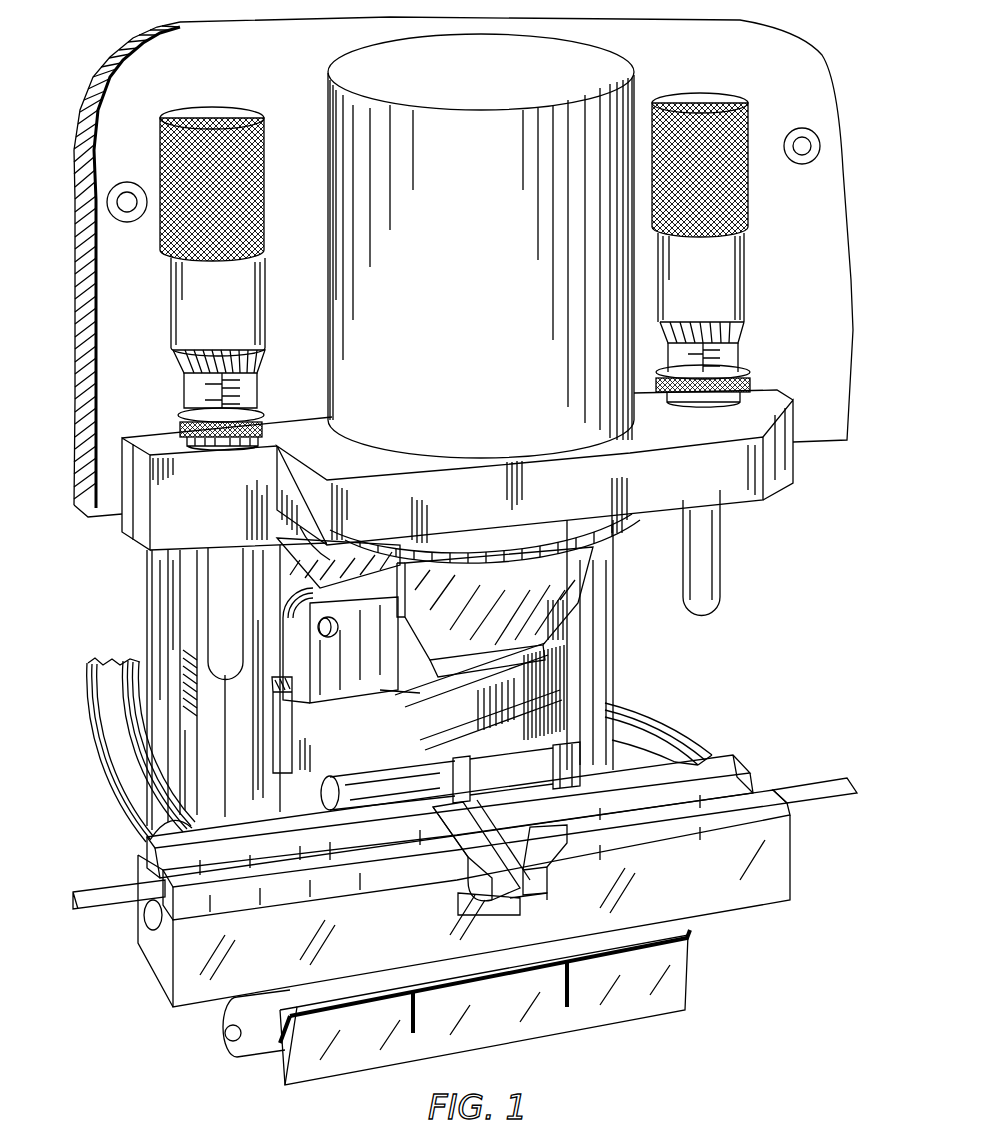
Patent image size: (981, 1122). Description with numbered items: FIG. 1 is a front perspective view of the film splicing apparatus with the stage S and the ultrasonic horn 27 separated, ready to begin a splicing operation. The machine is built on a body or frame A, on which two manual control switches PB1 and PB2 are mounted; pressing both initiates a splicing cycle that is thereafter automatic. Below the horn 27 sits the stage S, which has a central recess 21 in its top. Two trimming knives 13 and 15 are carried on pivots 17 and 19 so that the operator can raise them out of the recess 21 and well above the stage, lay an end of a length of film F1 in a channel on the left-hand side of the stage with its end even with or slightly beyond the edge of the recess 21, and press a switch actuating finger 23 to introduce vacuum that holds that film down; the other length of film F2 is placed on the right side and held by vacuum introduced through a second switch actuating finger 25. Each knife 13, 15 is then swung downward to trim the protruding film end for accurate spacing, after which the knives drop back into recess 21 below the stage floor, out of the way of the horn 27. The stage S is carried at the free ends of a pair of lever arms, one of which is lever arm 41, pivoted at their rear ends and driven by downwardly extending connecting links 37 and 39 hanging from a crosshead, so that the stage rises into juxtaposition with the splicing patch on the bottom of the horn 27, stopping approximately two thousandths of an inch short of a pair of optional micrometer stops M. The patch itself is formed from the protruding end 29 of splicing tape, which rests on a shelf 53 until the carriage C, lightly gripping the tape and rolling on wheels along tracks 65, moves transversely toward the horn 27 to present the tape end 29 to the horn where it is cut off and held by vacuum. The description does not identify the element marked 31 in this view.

The body or frame A is at (851, 233).
The manual control switch PB1 is at (122, 196).
The manual control switch PB2 is at (797, 138).
The micrometer stops M is at (455, 271).
The carriage C is at (269, 645).
The trimming knife 13 is at (477, 880).
The trimming knife 15 is at (547, 877).
The pivot 17 is at (347, 773).
The pivot 19 is at (473, 757).
The central recess 21 is at (508, 900).
The switch actuating finger 23 is at (300, 1030).
The switch actuating finger 25 is at (680, 962).
The horn 27 is at (495, 612).
The protruding end of tape 29 is at (330, 653).
The plate 31 is at (386, 609).
The connecting link 37 is at (150, 646).
The connecting link 39 is at (611, 648).
The lever arm 41 is at (223, 1008).
The shelf 53 is at (400, 688).
The tracks 65 is at (490, 723).
The length of film F1 is at (83, 893).
The length of film F2 is at (832, 790).
The stage S is at (235, 963).